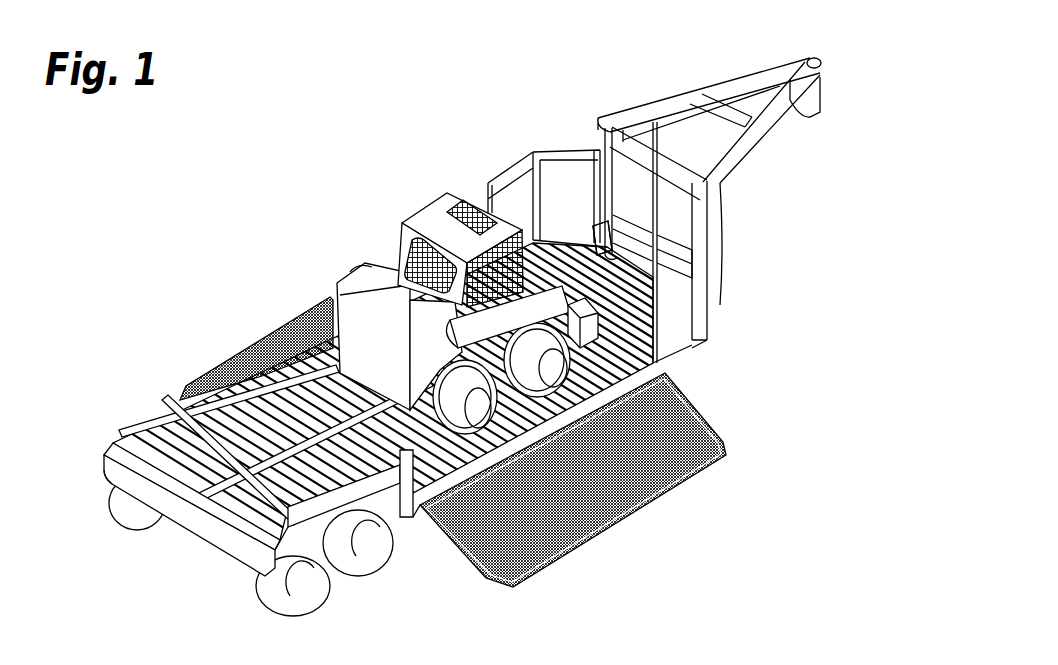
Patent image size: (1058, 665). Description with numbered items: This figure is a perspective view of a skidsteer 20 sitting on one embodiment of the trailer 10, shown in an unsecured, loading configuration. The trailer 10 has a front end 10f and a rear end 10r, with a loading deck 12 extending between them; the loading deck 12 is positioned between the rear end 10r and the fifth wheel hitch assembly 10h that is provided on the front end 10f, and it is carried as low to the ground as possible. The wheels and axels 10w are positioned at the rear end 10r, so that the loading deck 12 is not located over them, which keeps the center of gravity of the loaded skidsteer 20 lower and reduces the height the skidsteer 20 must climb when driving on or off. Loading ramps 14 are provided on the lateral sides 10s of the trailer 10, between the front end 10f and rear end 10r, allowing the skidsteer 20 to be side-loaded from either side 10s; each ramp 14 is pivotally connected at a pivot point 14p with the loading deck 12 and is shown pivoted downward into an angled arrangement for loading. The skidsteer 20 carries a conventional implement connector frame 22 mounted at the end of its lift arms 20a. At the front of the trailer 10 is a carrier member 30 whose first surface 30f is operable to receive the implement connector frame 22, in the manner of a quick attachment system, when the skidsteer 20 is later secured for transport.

The trailer 10 is at (388, 117).
The front end 10f is at (561, 100).
The fifth wheel hitch assembly 10h is at (686, 68).
The rear end 10r is at (105, 547).
The wheels and axels 10w is at (266, 617).
The lateral side 10s is at (422, 527).
The loading deck 12 is at (335, 398).
The loading ramp 14 is at (212, 317).
The pivot point 14p is at (422, 527).
The skidsteer 20 is at (345, 222).
The lift arms 20a is at (545, 297).
The implement connector frame 22 is at (604, 332).
The carrier member 30 is at (608, 241).
The first surface 30f is at (608, 241).